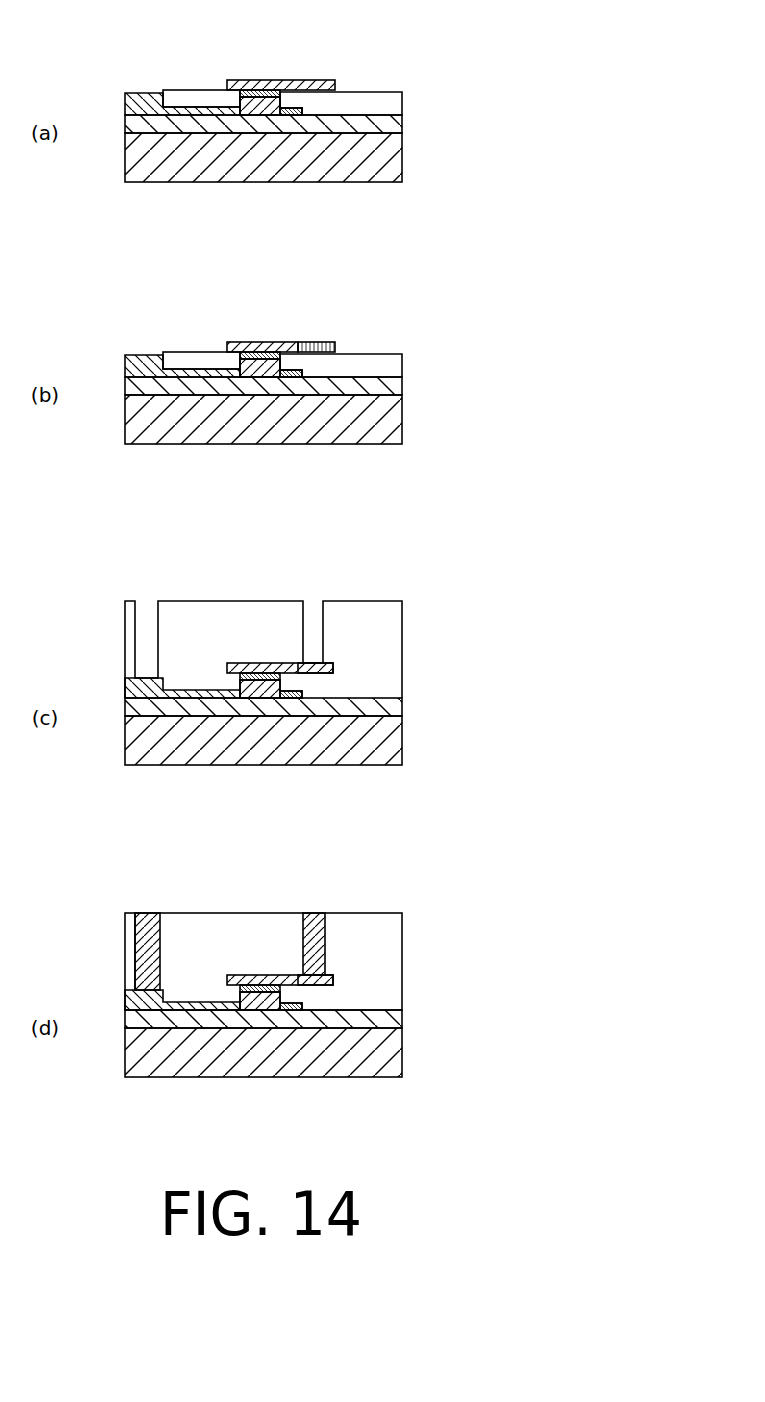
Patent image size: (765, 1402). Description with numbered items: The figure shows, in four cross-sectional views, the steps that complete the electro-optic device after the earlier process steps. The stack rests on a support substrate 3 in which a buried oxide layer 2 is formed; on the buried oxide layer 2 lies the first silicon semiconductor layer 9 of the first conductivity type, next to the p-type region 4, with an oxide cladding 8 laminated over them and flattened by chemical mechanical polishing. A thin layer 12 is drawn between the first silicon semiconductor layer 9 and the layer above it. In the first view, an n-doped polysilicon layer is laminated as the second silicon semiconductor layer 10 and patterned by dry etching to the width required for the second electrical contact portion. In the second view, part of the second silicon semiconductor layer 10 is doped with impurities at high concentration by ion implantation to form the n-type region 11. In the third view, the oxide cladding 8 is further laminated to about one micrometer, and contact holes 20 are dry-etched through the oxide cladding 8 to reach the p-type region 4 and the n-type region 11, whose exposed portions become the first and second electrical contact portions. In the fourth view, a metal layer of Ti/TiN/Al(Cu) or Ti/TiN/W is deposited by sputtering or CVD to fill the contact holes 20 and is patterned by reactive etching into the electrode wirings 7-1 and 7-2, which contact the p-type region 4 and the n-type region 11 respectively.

The buried oxide layer 2 is at (392, 123).
The support substrate 3 is at (228, 163).
The p-type region 4 is at (140, 104).
The electrode wiring 7-1 is at (150, 925).
The electrode wiring 7-2 is at (313, 925).
The oxide cladding 8 is at (188, 98).
The first silicon semiconductor layer 9 is at (280, 112).
The second silicon semiconductor layer 10 is at (305, 87).
The n-type region 11 is at (323, 347).
The dielectric layer 12 is at (255, 89).
The contact holes 20 is at (148, 612).